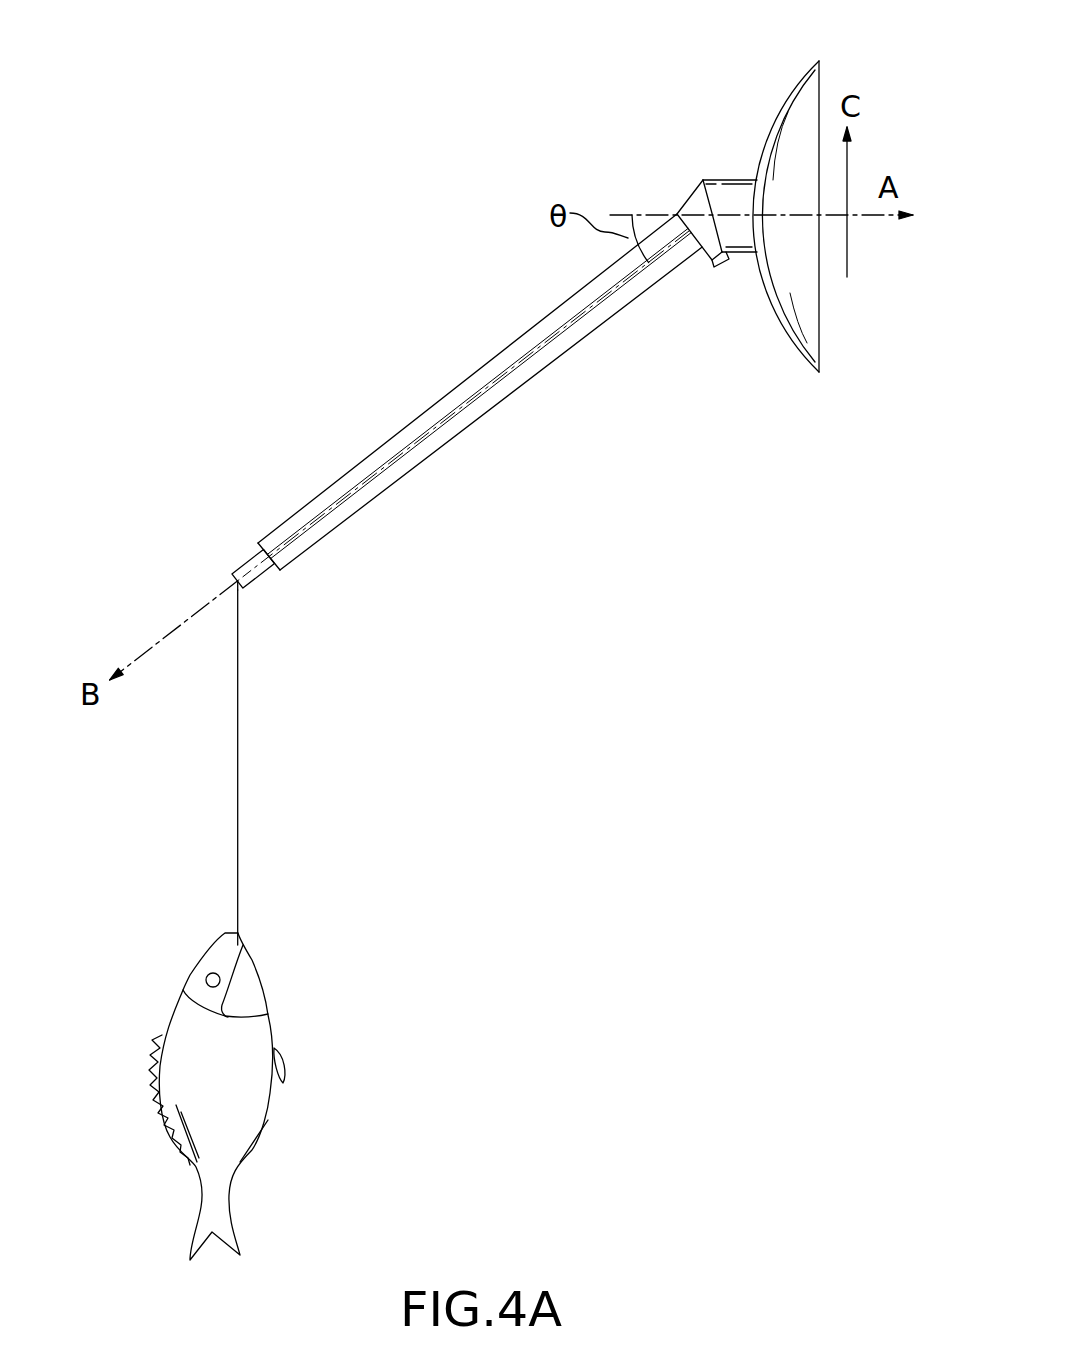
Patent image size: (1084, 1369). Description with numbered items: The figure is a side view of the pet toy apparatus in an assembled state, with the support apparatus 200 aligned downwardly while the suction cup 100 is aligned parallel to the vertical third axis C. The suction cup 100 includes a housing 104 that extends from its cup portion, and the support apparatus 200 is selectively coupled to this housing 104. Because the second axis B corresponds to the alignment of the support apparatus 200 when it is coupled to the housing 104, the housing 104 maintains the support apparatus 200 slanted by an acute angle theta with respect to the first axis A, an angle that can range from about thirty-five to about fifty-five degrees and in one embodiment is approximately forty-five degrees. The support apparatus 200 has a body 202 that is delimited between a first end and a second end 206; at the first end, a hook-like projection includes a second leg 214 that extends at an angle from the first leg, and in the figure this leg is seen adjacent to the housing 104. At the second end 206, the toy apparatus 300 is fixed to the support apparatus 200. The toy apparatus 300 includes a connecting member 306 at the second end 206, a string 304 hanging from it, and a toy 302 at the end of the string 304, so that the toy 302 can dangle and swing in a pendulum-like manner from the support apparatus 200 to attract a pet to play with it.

The suction cup 100 is at (704, 209).
The housing 104 is at (688, 194).
The second leg 214 is at (720, 264).
The support apparatus 200 is at (424, 442).
The body 202 is at (517, 340).
The second end 206 is at (258, 547).
The connecting member 306 is at (262, 584).
The string 304 is at (238, 765).
The toy 302 is at (262, 986).
The toy apparatus 300 is at (290, 1089).